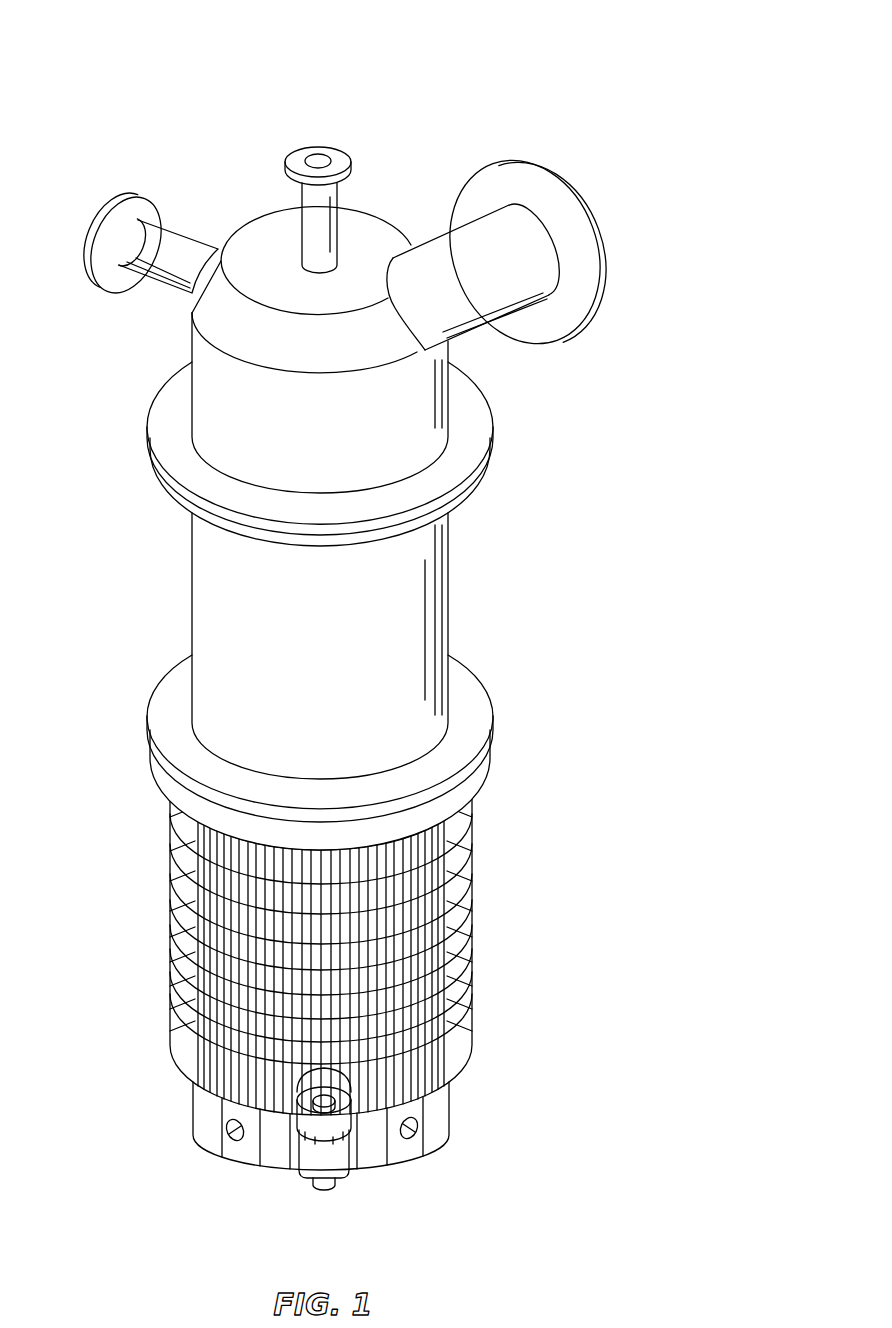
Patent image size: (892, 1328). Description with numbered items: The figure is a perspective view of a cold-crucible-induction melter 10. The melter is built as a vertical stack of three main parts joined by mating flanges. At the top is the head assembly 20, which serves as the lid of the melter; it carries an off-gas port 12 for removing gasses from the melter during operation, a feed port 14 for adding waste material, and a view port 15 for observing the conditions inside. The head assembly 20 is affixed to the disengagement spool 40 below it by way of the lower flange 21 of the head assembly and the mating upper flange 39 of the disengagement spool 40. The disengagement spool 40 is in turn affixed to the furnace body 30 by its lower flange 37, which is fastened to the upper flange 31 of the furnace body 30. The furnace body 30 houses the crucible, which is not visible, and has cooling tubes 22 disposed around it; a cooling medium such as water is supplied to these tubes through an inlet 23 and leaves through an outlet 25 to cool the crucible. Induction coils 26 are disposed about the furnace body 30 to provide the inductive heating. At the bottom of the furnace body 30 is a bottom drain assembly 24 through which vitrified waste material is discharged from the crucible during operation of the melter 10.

The cold-crucible-induction melter 10 is at (649, 90).
The off-gas port 12 is at (553, 188).
The feed port 14 is at (335, 152).
The view port 15 is at (117, 210).
The head assembly 20 is at (210, 366).
The lower flange 21 is at (470, 436).
The cooling tubes 22 is at (208, 1070).
The inlet 23 is at (228, 1128).
The bottom drain assembly 24 is at (315, 1160).
The outlet 25 is at (412, 1135).
The induction coils 26 is at (473, 877).
The furnace body 30 is at (347, 1000).
The upper flange 31 is at (480, 773).
The lower flange 37 is at (475, 700).
The upper flange 39 is at (410, 538).
The disengagement spool 40 is at (396, 612).